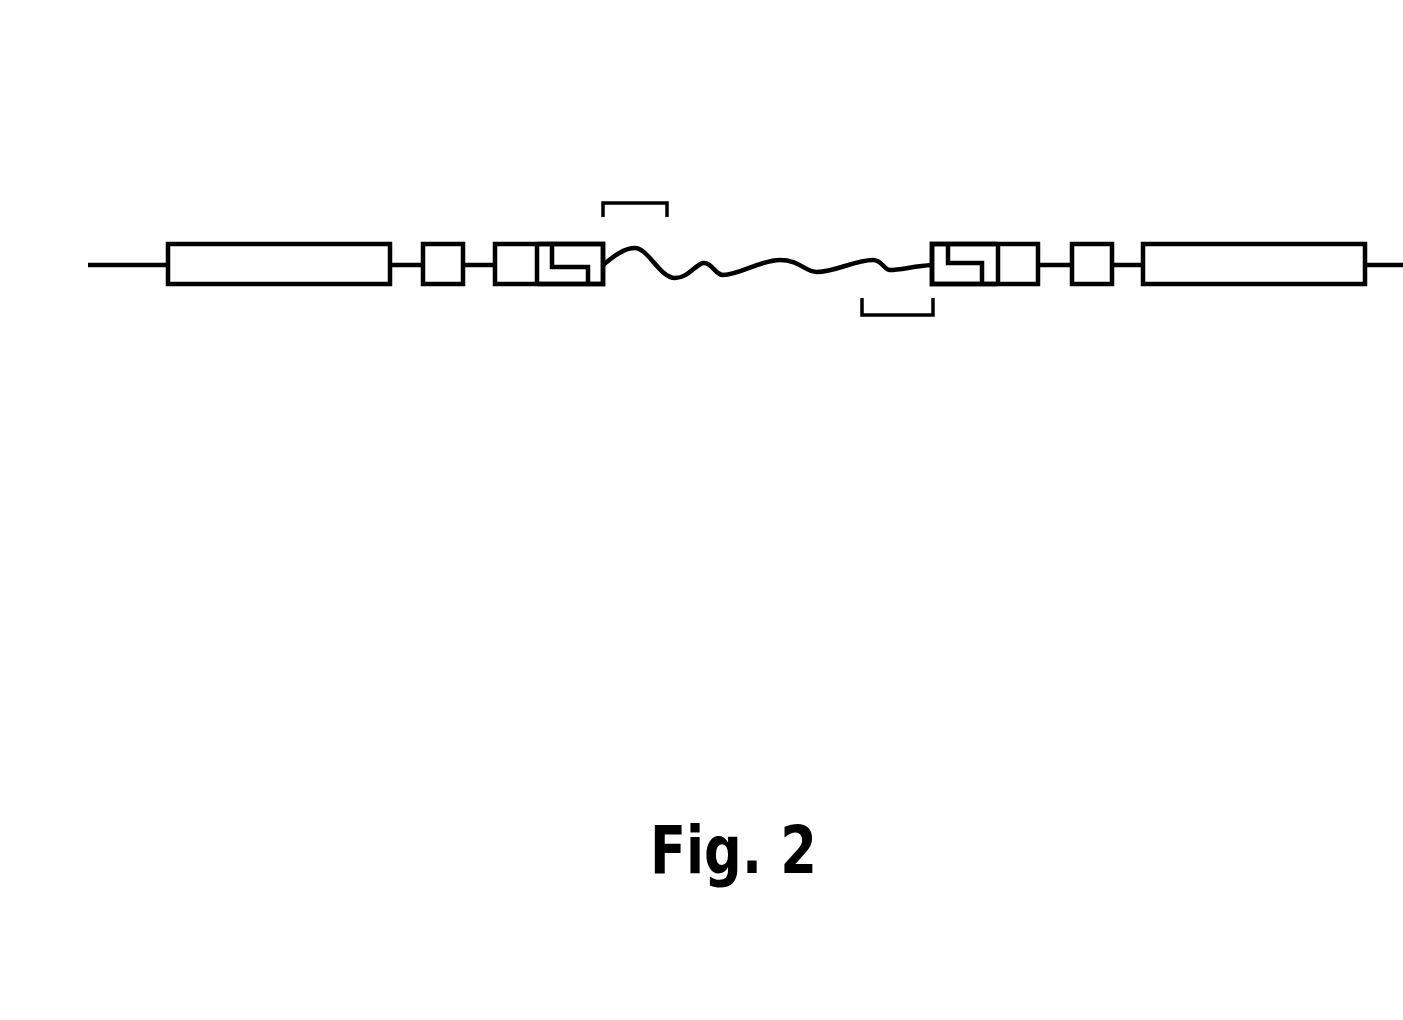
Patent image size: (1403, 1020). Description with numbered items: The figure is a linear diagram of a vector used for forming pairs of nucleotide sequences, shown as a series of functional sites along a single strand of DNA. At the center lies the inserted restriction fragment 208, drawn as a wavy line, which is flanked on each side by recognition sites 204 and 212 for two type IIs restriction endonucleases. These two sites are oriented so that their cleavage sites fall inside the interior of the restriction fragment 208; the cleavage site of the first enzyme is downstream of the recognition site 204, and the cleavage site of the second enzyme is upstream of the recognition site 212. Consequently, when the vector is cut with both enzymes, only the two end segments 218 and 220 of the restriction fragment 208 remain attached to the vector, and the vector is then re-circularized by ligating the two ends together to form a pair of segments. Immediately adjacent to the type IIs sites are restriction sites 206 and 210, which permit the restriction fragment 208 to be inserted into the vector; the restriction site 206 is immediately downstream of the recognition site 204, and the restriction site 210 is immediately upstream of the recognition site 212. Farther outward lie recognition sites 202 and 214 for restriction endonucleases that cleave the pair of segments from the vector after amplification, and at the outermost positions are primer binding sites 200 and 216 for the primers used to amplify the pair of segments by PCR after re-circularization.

The primer binding site 200 is at (275, 287).
The recognition site 202 is at (443, 287).
The recognition site 204 is at (510, 287).
The restriction site 206 is at (567, 287).
The restriction fragment 208 is at (703, 262).
The restriction site 210 is at (958, 244).
The recognition site 212 is at (1017, 244).
The recognition site 214 is at (1093, 244).
The primer binding site 216 is at (1235, 244).
The segment 218 is at (635, 203).
The segment 220 is at (898, 315).